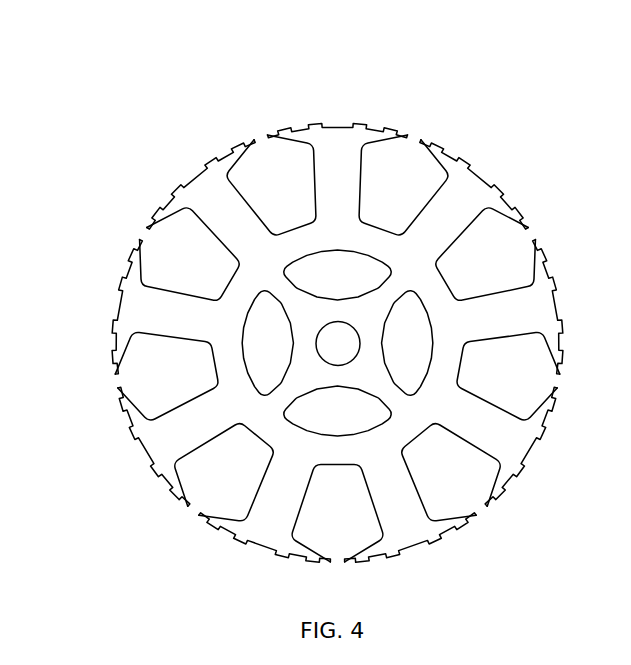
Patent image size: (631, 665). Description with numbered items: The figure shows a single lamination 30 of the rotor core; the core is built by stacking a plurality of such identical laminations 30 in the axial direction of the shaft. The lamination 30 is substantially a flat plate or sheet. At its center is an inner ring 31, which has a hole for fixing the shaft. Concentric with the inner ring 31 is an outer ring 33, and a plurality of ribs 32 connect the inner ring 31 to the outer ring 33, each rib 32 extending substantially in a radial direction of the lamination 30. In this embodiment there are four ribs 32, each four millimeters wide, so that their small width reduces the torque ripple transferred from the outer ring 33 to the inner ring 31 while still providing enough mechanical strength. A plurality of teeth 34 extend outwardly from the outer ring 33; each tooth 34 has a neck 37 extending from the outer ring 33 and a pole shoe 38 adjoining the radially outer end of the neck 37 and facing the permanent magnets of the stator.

The lamination 30 is at (203, 122).
The inner ring 31 is at (371, 340).
The rib 32 is at (387, 396).
The outer ring 33 is at (232, 306).
The tooth 34 is at (178, 317).
The neck 37 is at (340, 193).
The pole shoe 38 is at (334, 143).